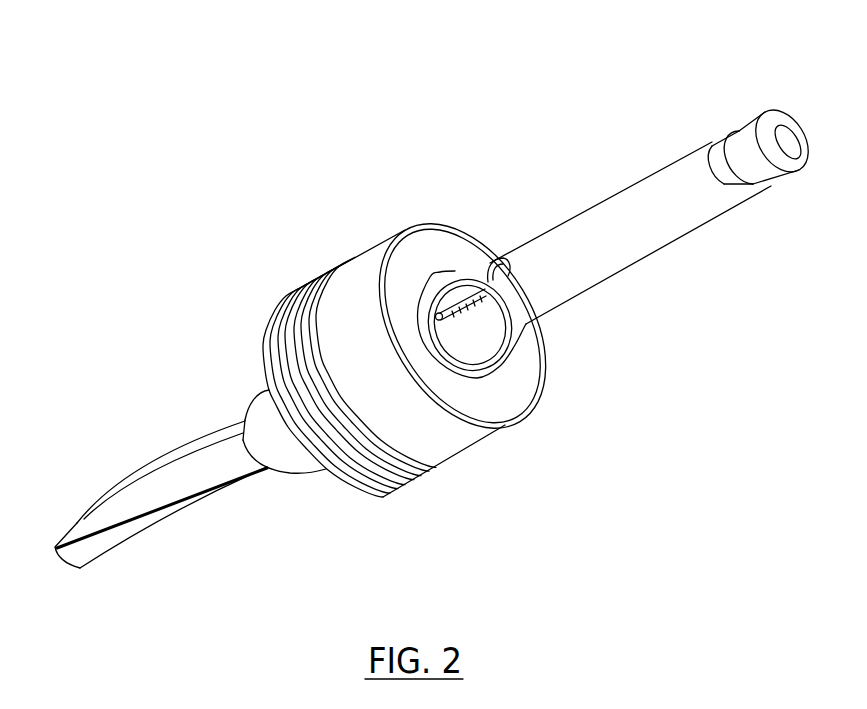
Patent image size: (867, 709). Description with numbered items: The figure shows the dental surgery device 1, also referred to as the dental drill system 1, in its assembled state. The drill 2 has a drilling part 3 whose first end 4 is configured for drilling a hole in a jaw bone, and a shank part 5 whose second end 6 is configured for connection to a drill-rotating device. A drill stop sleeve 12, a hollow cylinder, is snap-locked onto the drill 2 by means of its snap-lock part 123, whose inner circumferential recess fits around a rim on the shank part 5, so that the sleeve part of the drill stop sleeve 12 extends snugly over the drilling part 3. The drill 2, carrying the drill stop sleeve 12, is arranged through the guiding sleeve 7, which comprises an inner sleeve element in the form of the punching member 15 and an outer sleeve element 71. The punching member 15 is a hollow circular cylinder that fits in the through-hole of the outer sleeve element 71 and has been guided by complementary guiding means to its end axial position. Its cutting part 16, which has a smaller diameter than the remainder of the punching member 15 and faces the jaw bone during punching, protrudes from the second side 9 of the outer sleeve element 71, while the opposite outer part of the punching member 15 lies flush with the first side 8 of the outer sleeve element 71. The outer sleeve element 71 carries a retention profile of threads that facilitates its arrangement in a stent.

The dental surgery device 1 is at (337, 95).
The drill 2 is at (628, 218).
The drilling part 3 is at (194, 533).
The first end 4 is at (64, 588).
The shank part 5 is at (683, 270).
The second end 6 is at (767, 118).
The guiding sleeve 7 is at (309, 227).
The first side 8 is at (560, 357).
The second side 9 is at (249, 308).
The drill stop sleeve 12 is at (487, 272).
The punching member 15 is at (433, 277).
The cutting part 16 is at (262, 458).
The outer sleeve element 71 is at (467, 435).
The snap-lock part 123 is at (502, 343).